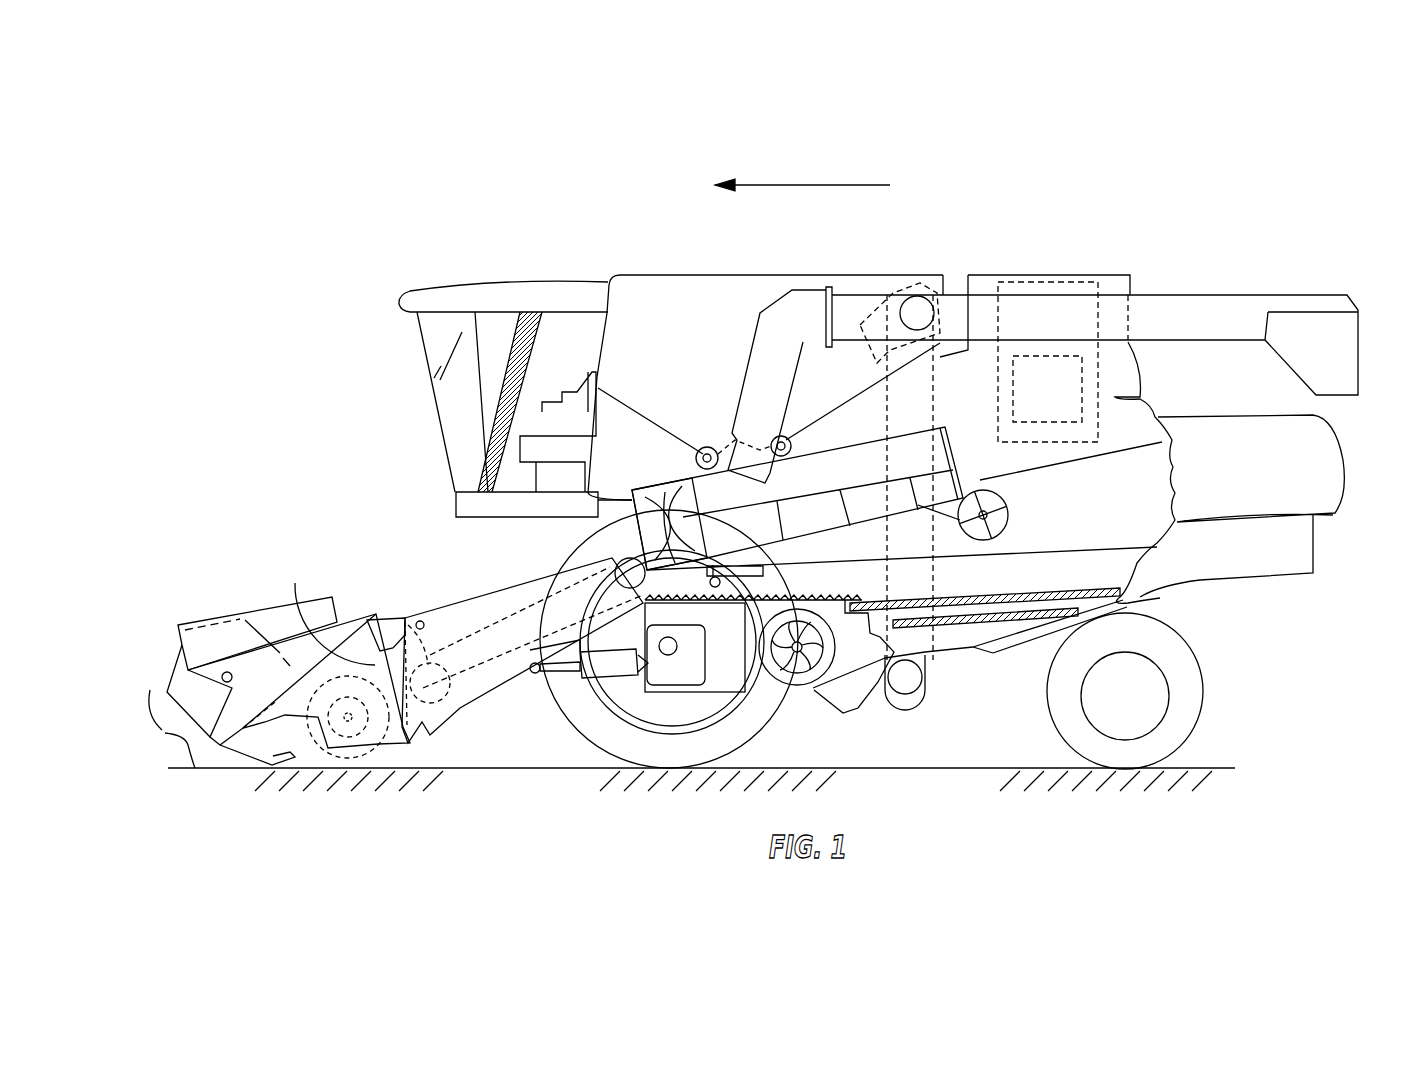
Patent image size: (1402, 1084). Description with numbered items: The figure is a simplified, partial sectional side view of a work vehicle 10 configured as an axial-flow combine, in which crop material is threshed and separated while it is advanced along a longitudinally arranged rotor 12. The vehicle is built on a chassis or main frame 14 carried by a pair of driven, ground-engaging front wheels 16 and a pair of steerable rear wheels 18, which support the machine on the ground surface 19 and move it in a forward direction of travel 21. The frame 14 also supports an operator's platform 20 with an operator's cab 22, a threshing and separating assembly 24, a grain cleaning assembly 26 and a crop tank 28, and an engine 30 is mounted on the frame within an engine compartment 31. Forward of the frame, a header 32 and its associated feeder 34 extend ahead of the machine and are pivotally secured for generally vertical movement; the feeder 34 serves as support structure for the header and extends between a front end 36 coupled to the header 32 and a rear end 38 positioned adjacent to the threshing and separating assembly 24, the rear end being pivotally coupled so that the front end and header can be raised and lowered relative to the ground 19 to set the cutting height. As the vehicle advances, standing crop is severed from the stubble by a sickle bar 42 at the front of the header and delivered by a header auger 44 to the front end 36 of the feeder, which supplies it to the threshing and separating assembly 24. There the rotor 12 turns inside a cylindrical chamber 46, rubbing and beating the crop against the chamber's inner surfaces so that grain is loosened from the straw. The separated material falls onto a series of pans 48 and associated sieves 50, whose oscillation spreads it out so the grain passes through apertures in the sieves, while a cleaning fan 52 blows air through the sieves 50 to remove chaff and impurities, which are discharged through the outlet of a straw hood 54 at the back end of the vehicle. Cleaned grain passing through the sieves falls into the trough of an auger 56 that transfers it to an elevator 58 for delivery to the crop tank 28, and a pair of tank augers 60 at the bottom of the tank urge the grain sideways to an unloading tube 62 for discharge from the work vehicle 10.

The work vehicle 10 is at (458, 232).
The rotor 12 is at (670, 480).
The main frame 14 is at (1168, 598).
The front wheels 16 is at (607, 732).
The rear wheels 18 is at (1197, 703).
The ground surface 19 is at (168, 692).
The operator's platform 20 is at (458, 506).
The forward direction of travel 21 is at (827, 183).
The operator's cab 22 is at (447, 396).
The threshing and separating assembly 24 is at (798, 484).
The grain cleaning assembly 26 is at (868, 684).
The crop tank 28 is at (700, 274).
The engine 30 is at (1037, 422).
The engine compartment 31 is at (1077, 442).
The header 32 is at (228, 590).
The feeder 34 is at (436, 586).
The front end 36 is at (313, 633).
The rear end 38 is at (615, 563).
The sickle bar 42 is at (222, 757).
The header auger 44 is at (367, 700).
The cylindrical chamber 46 is at (850, 465).
The pans 48 is at (810, 600).
The sieves 50 is at (965, 595).
The cleaning fan 52 is at (793, 668).
The straw hood 54 is at (1333, 480).
The auger 56 is at (907, 682).
The elevator 58 is at (940, 378).
The tank augers 60 is at (707, 446).
The unloading tube 62 is at (1193, 312).